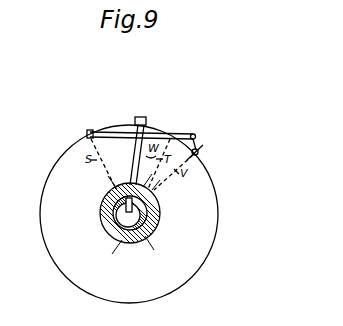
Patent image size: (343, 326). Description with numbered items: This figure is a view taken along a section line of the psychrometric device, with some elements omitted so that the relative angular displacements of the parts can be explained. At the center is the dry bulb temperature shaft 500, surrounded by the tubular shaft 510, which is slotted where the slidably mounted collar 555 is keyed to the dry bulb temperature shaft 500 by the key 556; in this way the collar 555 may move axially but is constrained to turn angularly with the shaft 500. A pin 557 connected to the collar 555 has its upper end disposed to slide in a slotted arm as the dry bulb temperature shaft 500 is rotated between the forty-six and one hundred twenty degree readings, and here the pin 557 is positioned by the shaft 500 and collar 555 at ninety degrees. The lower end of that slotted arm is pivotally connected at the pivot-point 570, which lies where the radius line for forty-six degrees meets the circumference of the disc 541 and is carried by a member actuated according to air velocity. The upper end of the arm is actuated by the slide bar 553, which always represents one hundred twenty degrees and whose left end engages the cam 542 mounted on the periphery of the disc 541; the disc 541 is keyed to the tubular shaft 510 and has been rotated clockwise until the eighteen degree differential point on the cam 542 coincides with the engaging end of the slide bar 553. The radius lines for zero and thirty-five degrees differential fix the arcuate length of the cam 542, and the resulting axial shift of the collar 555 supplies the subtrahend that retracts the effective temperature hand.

The disc 541 is at (40, 221).
The dry bulb temperature shaft 500 is at (147, 236).
The slidably mounted collar 555 is at (161, 213).
The tubular shaft 510 is at (123, 241).
The key 556 is at (112, 196).
The pin 557 is at (135, 120).
The slide bar 553 is at (192, 133).
The pivot-point 570 is at (89, 132).
The cam 542 is at (223, 172).